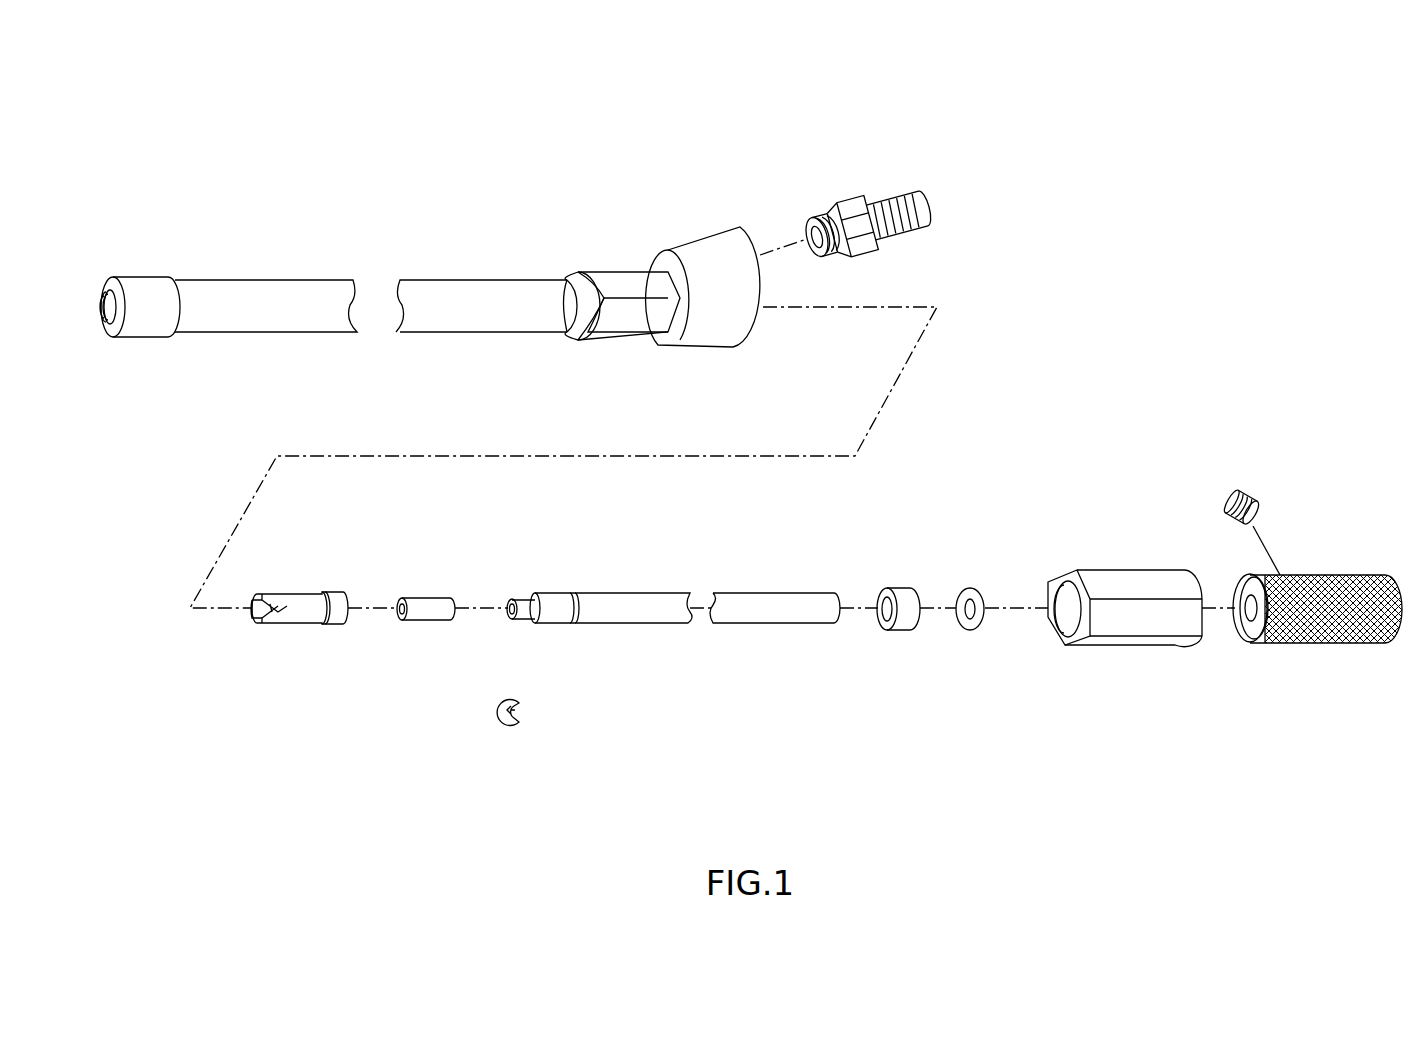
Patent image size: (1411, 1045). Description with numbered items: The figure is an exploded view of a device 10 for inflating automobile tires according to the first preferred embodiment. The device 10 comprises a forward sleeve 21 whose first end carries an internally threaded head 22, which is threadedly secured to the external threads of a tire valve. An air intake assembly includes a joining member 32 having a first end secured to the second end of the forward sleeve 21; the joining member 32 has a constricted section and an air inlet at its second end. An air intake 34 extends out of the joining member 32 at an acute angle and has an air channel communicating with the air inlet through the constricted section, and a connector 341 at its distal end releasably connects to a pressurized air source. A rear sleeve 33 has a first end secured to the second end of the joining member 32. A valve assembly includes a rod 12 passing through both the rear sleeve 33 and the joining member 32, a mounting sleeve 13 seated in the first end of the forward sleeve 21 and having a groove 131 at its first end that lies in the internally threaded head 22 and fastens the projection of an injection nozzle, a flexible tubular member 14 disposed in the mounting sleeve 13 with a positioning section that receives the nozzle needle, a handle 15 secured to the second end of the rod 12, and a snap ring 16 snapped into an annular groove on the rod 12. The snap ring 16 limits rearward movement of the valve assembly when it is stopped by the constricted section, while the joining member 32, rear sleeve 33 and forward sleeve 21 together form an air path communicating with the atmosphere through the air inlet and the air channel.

The device for inflating automobile tires 10 is at (1290, 160).
The rod 12 is at (775, 620).
The mounting sleeve 13 is at (298, 616).
The groove 131 is at (258, 622).
The flexible tubular member 14 is at (432, 614).
The handle 15 is at (1337, 620).
The snap ring 16 is at (562, 623).
The forward sleeve 21 is at (280, 300).
The internally threaded head 22 is at (112, 300).
The joining member 32 is at (624, 284).
The rear sleeve 33 is at (1140, 626).
The air intake 34 is at (718, 255).
The connector 341 is at (885, 208).